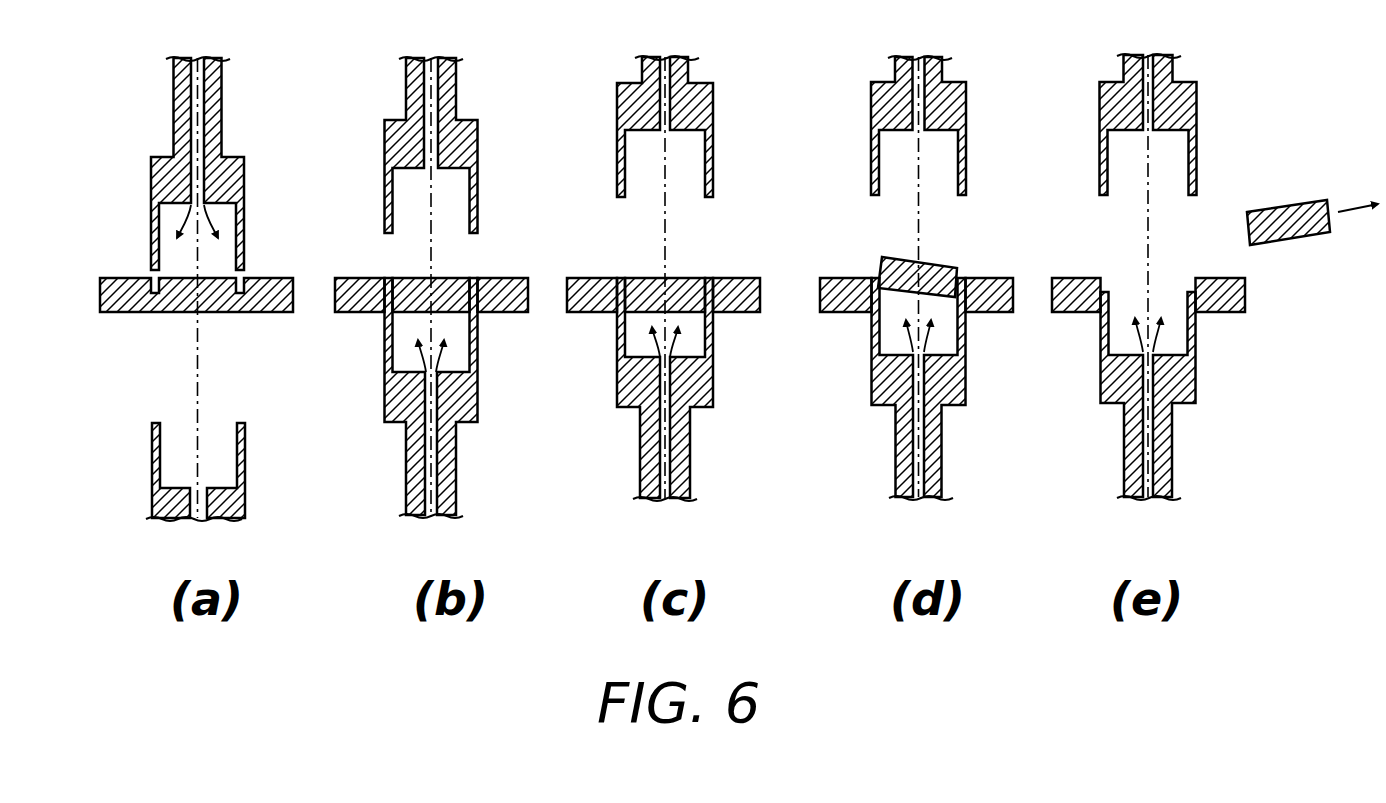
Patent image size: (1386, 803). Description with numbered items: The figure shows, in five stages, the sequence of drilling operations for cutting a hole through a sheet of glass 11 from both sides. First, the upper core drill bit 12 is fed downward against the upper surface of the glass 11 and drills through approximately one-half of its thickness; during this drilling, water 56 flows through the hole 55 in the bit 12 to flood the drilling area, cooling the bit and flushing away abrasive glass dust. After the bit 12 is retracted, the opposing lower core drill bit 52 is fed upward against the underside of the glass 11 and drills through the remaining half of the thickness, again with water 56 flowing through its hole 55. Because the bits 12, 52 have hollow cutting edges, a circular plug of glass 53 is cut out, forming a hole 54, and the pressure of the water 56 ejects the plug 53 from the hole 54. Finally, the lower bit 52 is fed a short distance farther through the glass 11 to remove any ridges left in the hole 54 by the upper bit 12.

The glass 11 is at (268, 278).
The core drill bit 12 is at (222, 106).
The core drill bit 52 is at (246, 498).
The plug of glass 53 is at (883, 259).
The hole 54 is at (1196, 282).
The hole 55 is at (174, 93).
The water 56 is at (208, 211).